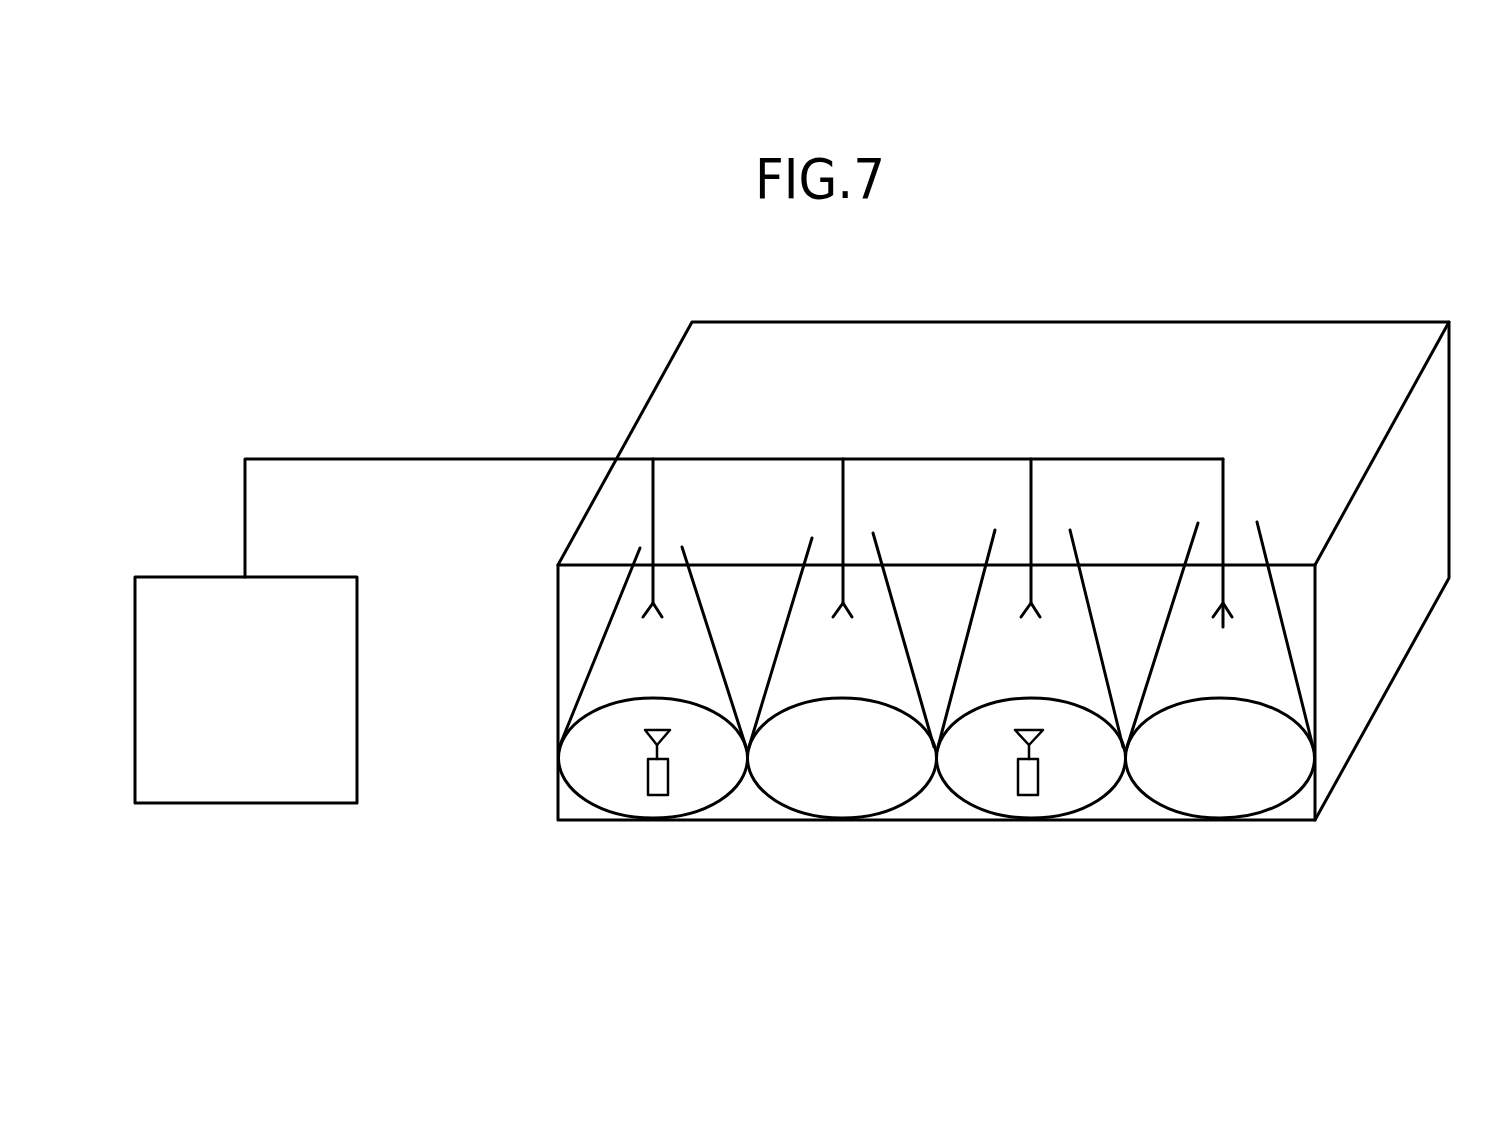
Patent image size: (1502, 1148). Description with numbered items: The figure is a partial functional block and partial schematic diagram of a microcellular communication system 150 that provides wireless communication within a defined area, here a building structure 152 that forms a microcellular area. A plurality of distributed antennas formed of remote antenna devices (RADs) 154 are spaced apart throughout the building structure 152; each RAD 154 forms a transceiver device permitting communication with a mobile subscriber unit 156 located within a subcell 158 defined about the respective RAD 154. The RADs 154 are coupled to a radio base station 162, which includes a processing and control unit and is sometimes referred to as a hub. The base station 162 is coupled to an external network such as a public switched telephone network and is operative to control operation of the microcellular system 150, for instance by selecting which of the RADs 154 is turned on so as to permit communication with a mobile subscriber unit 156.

The microcellular communication system 150 is at (506, 300).
The building structure 152 is at (1383, 647).
The remote antenna devices (RADs) 154 is at (653, 507).
The mobile subscriber unit 156 is at (668, 785).
The subcell 158 is at (612, 813).
The radio base station 162 is at (320, 577).